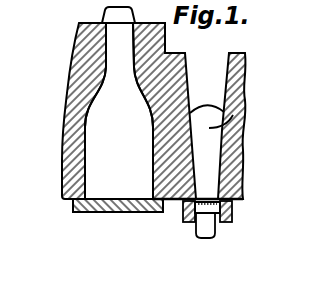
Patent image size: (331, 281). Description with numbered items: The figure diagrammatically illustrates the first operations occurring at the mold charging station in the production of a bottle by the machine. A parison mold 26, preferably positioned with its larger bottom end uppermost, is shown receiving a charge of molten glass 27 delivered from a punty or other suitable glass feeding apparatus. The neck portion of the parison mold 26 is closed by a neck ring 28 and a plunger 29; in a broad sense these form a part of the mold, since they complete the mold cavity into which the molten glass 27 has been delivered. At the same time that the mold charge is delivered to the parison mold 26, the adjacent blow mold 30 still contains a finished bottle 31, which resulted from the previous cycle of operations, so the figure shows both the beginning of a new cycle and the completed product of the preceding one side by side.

The blow mold 30 is at (77, 134).
The finished bottle 31 is at (104, 163).
The parison mold 26 is at (243, 140).
The charge of molten glass 27 is at (230, 113).
The neck ring 28 is at (232, 214).
The plunger 29 is at (217, 231).